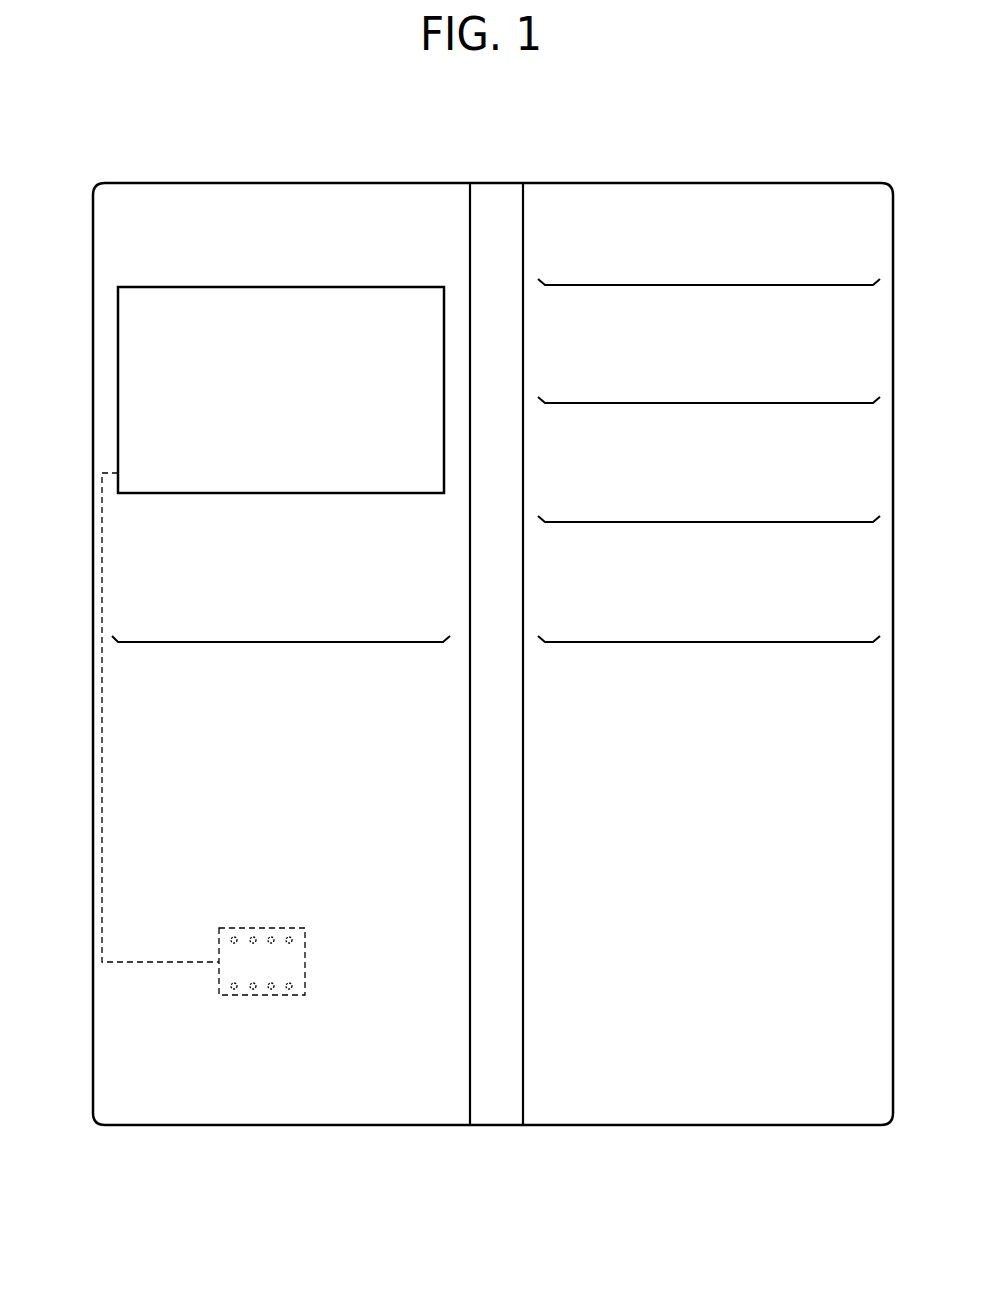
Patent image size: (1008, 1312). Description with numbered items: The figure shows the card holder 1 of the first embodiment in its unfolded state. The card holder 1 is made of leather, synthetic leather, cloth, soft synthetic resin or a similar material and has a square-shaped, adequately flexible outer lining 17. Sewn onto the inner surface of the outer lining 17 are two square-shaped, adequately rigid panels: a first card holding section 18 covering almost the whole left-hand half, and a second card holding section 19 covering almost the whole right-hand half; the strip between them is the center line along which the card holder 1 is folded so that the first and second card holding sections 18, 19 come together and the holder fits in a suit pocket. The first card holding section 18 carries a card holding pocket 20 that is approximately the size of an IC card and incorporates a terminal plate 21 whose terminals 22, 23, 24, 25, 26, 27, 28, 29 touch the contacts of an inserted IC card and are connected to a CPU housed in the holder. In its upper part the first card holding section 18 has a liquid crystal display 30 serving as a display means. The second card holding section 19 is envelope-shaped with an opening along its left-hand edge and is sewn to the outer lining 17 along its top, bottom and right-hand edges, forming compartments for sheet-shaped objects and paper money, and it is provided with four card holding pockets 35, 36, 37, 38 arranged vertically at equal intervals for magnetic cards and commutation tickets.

The card holder 1 is at (166, 151).
The outer lining 17 is at (496, 185).
The first card holding section 18 is at (288, 200).
The second card holding section 19 is at (689, 203).
The card holding pocket 20 is at (333, 652).
The terminal plate 21 is at (301, 960).
The terminal 22 is at (235, 989).
The terminal 23 is at (253, 989).
The terminal 24 is at (272, 989).
The terminal 25 is at (291, 989).
The terminal 26 is at (291, 938).
The terminal 27 is at (273, 937).
The terminal 28 is at (253, 937).
The terminal 29 is at (232, 937).
The liquid crystal display 30 is at (118, 343).
The card holding pocket 35 is at (771, 296).
The card holding pocket 36 is at (772, 410).
The card holding pocket 37 is at (772, 537).
The card holding pocket 38 is at (771, 655).